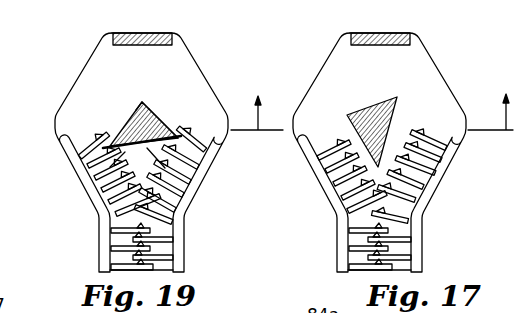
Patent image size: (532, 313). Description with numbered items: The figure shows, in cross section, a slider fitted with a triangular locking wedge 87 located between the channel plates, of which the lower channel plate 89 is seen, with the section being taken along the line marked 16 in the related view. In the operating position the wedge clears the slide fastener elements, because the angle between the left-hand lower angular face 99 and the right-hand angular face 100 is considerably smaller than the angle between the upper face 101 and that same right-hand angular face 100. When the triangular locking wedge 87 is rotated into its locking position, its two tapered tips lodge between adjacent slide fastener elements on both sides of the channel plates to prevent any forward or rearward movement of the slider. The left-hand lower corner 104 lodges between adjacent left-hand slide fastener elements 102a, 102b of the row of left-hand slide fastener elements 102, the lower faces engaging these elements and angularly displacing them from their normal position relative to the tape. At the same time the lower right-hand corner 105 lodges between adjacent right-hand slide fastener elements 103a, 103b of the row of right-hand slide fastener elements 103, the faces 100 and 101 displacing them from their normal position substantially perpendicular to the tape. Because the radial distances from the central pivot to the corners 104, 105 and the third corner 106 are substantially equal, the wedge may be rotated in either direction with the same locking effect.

In FIG. 19, the lower channel plate 89 is at (81, 75).
In FIG. 17, the lower channel plate 89 is at (438, 71).
In FIG. 19, the triangular locking wedge 87 is at (97, 192).
In FIG. 17, the triangular locking wedge 87 is at (373, 105).
In FIG. 19, the left-hand lower angular face 99 is at (128, 125).
In FIG. 19, the corner of the triangular locking wedge 106 is at (142, 100).
In FIG. 19, the upper face 101 is at (158, 117).
In FIG. 19, the left-hand lower corner 104 is at (104, 148).
In FIG. 19, the left-hand slide fastener element 102a is at (86, 150).
In FIG. 19, the left-hand slide fastener element 102b is at (92, 166).
In FIG. 17, the left-hand slide fastener elements 102 is at (348, 197).
In FIG. 19, the right-hand slide fastener element 103a is at (182, 126).
In FIG. 19, the right-hand slide fastener element 103b is at (189, 131).
In FIG. 17, the right-hand slide fastener elements 103 is at (410, 217).
In FIG. 19, the lower right-hand corner 105 is at (184, 141).
In FIG. 19, the right-hand angular face 100 is at (190, 186).
In FIG. 19, the section line 16- 16 is at (257, 104).
In FIG. 17, the section line 16- 16 is at (490, 103).